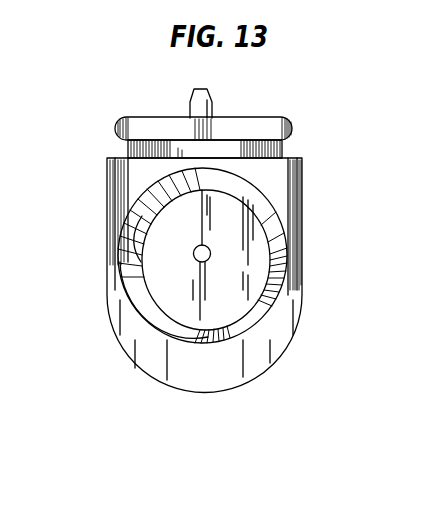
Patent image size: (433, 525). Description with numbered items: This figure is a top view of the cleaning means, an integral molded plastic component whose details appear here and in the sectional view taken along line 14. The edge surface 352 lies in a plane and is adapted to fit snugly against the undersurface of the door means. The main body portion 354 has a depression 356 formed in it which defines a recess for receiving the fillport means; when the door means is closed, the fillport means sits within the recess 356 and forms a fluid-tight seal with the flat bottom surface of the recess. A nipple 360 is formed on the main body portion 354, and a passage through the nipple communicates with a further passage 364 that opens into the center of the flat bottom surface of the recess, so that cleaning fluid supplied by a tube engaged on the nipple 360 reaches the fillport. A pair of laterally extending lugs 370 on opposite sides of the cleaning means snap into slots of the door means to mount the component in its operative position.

The edge surface 352 is at (78, 101).
The main body portion 354 is at (283, 189).
The depression 356 is at (132, 268).
The nipple 360 is at (212, 107).
The further passage 364 is at (211, 254).
The laterally extending lugs 370 is at (292, 125).
The section line for FIG. 14 is at (202, 89).